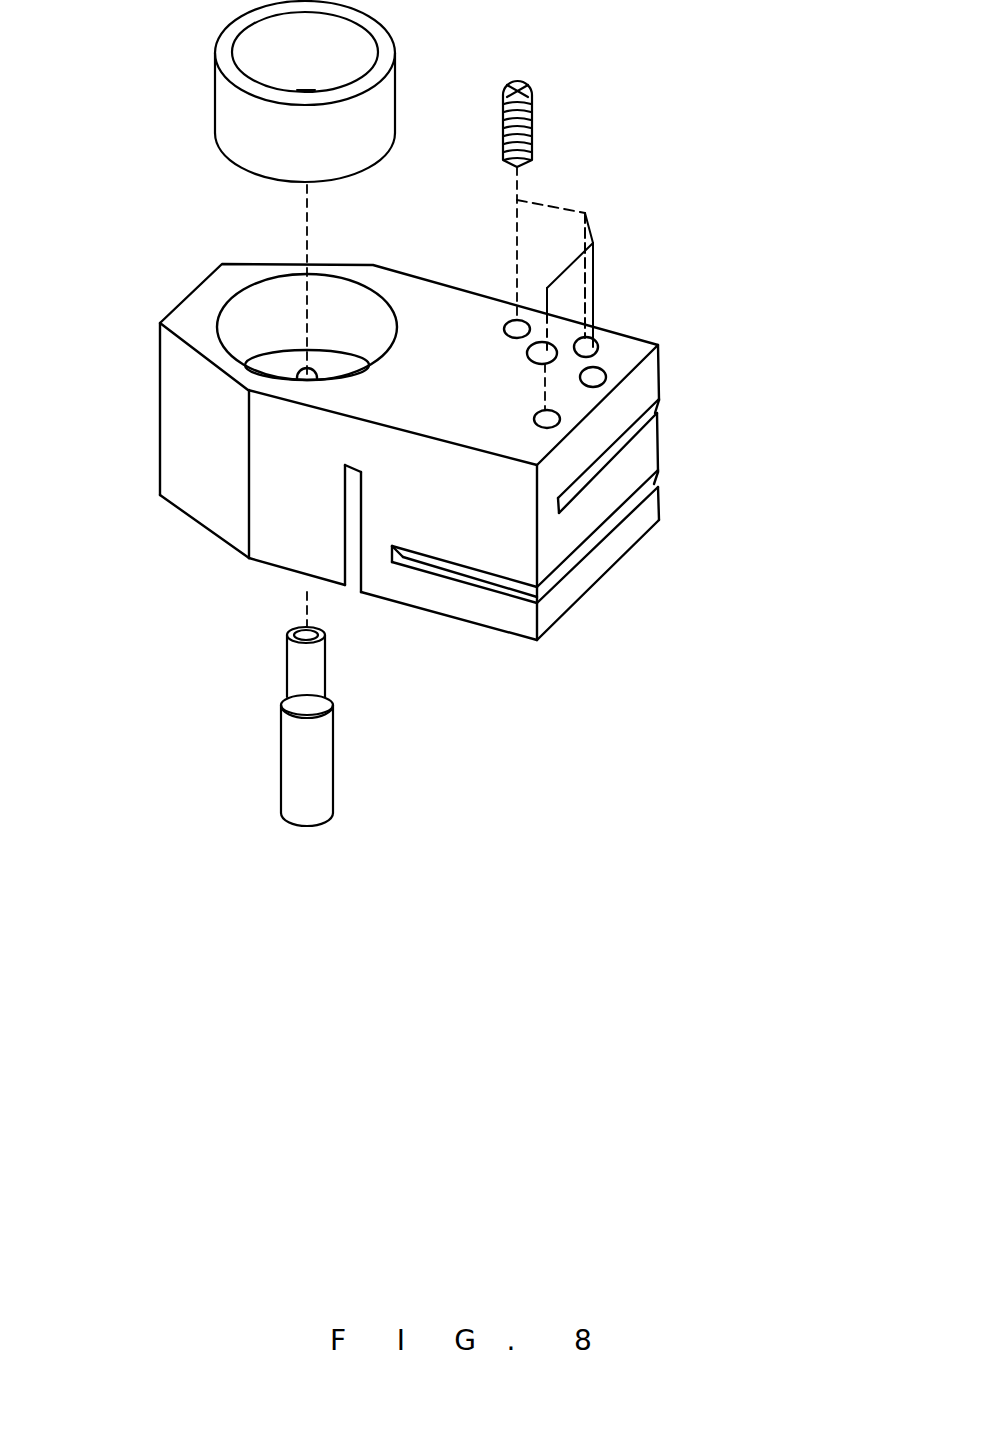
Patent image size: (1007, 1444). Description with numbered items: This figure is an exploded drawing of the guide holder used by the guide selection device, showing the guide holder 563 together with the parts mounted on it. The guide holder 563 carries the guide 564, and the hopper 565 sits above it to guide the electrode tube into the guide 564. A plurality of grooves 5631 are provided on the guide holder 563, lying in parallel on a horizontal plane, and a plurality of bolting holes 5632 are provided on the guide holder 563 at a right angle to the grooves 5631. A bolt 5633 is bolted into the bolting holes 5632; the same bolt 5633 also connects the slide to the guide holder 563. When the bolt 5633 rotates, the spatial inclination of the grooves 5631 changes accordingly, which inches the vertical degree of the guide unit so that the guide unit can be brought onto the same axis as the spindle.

The guide holder 563 is at (200, 467).
The guide 564 is at (308, 755).
The hopper 565 is at (255, 140).
The grooves 5631 is at (565, 573).
The bolting holes 5632 is at (510, 327).
The bolt 5633 is at (525, 133).